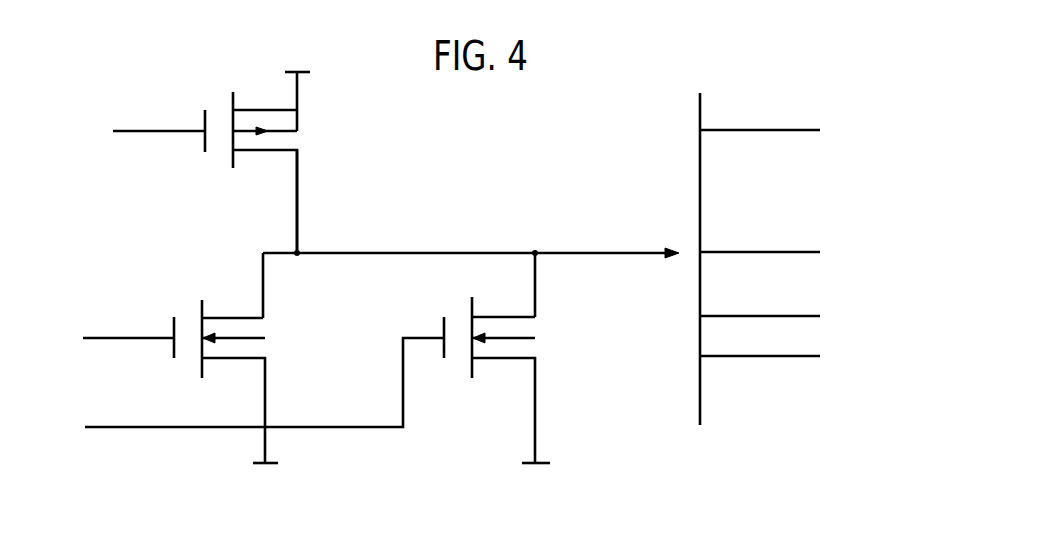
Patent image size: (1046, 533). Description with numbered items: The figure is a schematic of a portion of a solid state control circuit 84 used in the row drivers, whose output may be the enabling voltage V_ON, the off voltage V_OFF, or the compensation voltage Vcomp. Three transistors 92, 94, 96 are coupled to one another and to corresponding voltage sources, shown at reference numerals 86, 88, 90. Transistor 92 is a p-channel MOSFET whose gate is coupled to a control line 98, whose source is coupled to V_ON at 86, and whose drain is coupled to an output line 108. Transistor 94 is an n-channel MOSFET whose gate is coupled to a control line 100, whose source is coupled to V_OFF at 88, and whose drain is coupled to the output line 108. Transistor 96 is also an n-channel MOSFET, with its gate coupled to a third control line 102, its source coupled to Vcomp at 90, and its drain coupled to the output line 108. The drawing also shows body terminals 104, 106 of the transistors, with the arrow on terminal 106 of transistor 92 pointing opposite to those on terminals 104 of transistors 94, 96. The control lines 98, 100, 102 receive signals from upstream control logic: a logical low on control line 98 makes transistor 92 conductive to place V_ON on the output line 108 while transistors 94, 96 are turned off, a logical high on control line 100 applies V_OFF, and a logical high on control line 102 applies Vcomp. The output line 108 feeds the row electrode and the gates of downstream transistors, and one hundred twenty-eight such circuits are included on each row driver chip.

The solid state control circuit 84 is at (672, 452).
The coupling to the enabling voltage source 86 is at (288, 70).
The coupling to the off voltage source 88 is at (255, 465).
The coupling to the compensation voltage source 90 is at (525, 465).
The p-channel MOSFET transistor 92 is at (267, 110).
The n-channel MOSFET transistor 94 is at (243, 317).
The n-channel MOSFET transistor 96 is at (510, 315).
The control line 98 is at (143, 128).
The control line 100 is at (132, 337).
The third control line 102 is at (135, 423).
The transistor body terminal 104 is at (266, 323).
The transistor body terminal 106 is at (300, 132).
The output line 108 is at (578, 249).